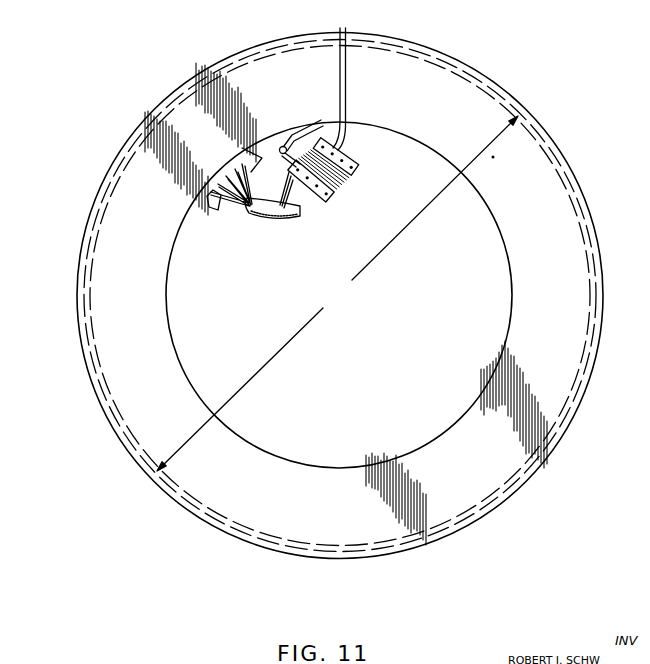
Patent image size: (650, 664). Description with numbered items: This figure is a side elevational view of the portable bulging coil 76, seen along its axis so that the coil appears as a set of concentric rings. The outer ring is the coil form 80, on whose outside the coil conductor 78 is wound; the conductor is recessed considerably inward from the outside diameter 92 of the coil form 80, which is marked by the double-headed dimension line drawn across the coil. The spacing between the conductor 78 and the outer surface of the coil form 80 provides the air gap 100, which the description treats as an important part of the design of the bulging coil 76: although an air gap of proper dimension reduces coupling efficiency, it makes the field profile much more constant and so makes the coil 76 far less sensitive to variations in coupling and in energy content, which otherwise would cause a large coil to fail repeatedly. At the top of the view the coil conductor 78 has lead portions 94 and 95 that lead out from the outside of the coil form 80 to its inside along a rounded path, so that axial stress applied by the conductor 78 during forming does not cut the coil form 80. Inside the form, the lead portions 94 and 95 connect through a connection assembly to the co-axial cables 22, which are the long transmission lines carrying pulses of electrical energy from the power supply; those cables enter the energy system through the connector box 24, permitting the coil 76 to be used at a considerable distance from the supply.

The portable bulging coil 76 is at (132, 102).
The coil conductor 78 is at (576, 197).
The air gap 100 is at (541, 123).
The coil form 80 is at (153, 326).
The outside diameter 92 is at (337, 293).
The lead portion 95 is at (347, 72).
The lead portion 94 is at (288, 132).
The transmission lines 22 is at (239, 212).
The connector box 24 is at (210, 206).